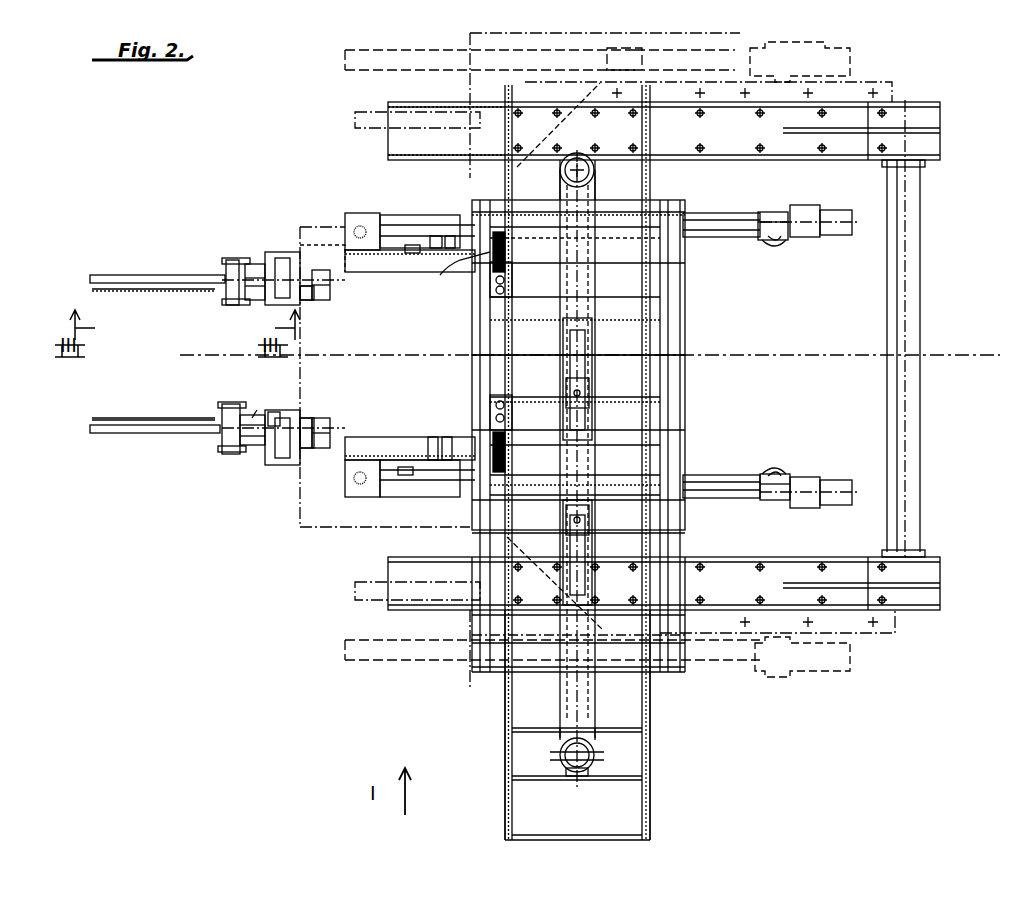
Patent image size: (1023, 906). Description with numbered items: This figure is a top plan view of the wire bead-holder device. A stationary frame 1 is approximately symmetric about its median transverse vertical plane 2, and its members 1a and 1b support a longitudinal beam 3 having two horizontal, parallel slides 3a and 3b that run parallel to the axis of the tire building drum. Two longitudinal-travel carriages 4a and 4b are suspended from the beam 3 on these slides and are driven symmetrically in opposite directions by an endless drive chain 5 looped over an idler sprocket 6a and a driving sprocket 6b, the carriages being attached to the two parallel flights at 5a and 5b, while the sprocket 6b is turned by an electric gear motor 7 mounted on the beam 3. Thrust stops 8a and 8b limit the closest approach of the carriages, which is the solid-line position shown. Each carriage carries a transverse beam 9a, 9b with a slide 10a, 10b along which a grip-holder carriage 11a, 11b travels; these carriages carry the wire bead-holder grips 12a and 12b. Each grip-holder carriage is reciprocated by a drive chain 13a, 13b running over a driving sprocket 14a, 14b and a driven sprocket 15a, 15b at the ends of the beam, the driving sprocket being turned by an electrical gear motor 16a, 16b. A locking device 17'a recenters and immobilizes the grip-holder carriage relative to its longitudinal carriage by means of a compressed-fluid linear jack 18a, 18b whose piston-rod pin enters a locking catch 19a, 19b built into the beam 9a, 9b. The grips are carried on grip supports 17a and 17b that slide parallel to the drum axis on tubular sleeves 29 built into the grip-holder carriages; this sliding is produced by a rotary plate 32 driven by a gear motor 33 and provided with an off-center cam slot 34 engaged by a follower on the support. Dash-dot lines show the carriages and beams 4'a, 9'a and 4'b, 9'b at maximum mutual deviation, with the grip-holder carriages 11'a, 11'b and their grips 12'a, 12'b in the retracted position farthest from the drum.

The stationary frame 1 is at (928, 484).
The frame member 1a is at (838, 96).
The frame member 1b is at (789, 565).
The median transverse vertical plane 2 is at (944, 357).
The longitudinal beam 3 is at (653, 778).
The guide slide 3a is at (505, 694).
The guide slide 3b is at (650, 717).
The longitudinal-travel carriage 4a is at (560, 277).
The longitudinal-travel carriage 4b is at (562, 377).
The longitudinal-travel carriage in maximum deviation position 4'a is at (542, 95).
The longitudinal-travel carriage in maximum deviation position 4'b is at (552, 654).
The drive chain 5 is at (584, 706).
The connection of carriage 4a to chain flight 5a is at (565, 504).
The connection of carriage 4b to chain flight 5b is at (594, 432).
The idler sprocket 6a is at (586, 174).
The driving sprocket 6b is at (571, 740).
The electric gear motor 7 is at (596, 760).
The thrust stop 8a is at (568, 402).
The thrust stop 8b is at (592, 507).
The transverse beam 9a is at (385, 353).
The transverse beam 9b is at (383, 495).
The transverse beam in maximum deviation position 9'a is at (567, 41).
The transverse beam in maximum deviation position 9'b is at (642, 654).
The slide 10a is at (410, 228).
The slide 10b is at (393, 482).
The grip-holder carriage 11a is at (410, 277).
The grip-holder carriage 11b is at (410, 426).
The grip-holder carriage in retracted position 11'a is at (708, 58).
The grip-holder carriage in retracted position 11'b is at (809, 658).
The wire bead-holder grip 12a is at (157, 258).
The wire bead-holder grip 12b is at (155, 445).
The wire bead-holder grip in retracted position 12'a is at (410, 139).
The wire bead-holder grip in retracted position 12'b is at (400, 605).
The drive chain 13a is at (704, 237).
The drive chain 13b is at (720, 474).
The driving sprocket 14a is at (233, 258).
The driving sprocket 14b is at (232, 454).
The driven sprocket 15a is at (265, 250).
The driven sprocket 15b is at (263, 465).
The electrical gear motor 16a is at (806, 236).
The electrical gear motor 16b is at (808, 477).
The grip support 17a is at (281, 253).
The grip support 17b is at (275, 465).
The locking device 17'a is at (461, 278).
The compressed-fluid linear jack 18a is at (508, 276).
The compressed-fluid linear jack 18b is at (490, 430).
The locking catch 19a is at (505, 240).
The locking catch 19b is at (504, 464).
The tubular sleeve 29 is at (255, 418).
The rotary plate 32 is at (305, 304).
The gear motor 33 is at (325, 302).
The cam slot 34 is at (278, 412).